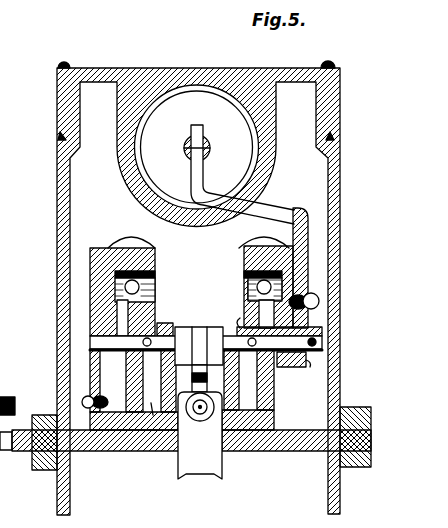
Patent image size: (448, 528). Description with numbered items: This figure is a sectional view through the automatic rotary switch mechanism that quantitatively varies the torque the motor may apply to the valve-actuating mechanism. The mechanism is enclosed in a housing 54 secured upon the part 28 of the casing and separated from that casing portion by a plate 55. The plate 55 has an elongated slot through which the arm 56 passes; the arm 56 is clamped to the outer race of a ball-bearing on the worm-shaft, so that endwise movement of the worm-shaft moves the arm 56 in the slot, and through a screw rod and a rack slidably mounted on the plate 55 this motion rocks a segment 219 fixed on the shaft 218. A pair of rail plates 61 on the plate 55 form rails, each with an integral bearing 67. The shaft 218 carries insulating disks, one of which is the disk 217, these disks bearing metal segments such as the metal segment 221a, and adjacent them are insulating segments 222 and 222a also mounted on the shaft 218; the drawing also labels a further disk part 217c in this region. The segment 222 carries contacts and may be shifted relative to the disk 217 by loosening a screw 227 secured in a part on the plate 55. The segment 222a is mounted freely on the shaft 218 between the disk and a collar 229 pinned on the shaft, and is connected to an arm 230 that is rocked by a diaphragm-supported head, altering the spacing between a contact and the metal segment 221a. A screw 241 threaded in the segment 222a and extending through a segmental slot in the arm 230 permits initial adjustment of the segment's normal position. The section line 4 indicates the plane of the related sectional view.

The section line 4- 4 is at (196, 507).
The part of the casing 28 is at (69, 508).
The housing 54 is at (57, 247).
The plate 55 is at (146, 449).
The arm 56 is at (220, 470).
The rail plates 61 is at (266, 420).
The bearings 67 is at (165, 324).
The disk 217 is at (152, 283).
The valve seat 217c is at (244, 294).
The shaft 218 is at (92, 344).
The segment 219 is at (201, 352).
The metal segment 221a is at (248, 277).
The segment of insulating material 222 is at (92, 280).
The segment of insulating material 222a is at (269, 250).
The screw 227 is at (90, 402).
The collar 229 is at (313, 366).
The arm 230 is at (198, 179).
The screw 241 is at (318, 299).